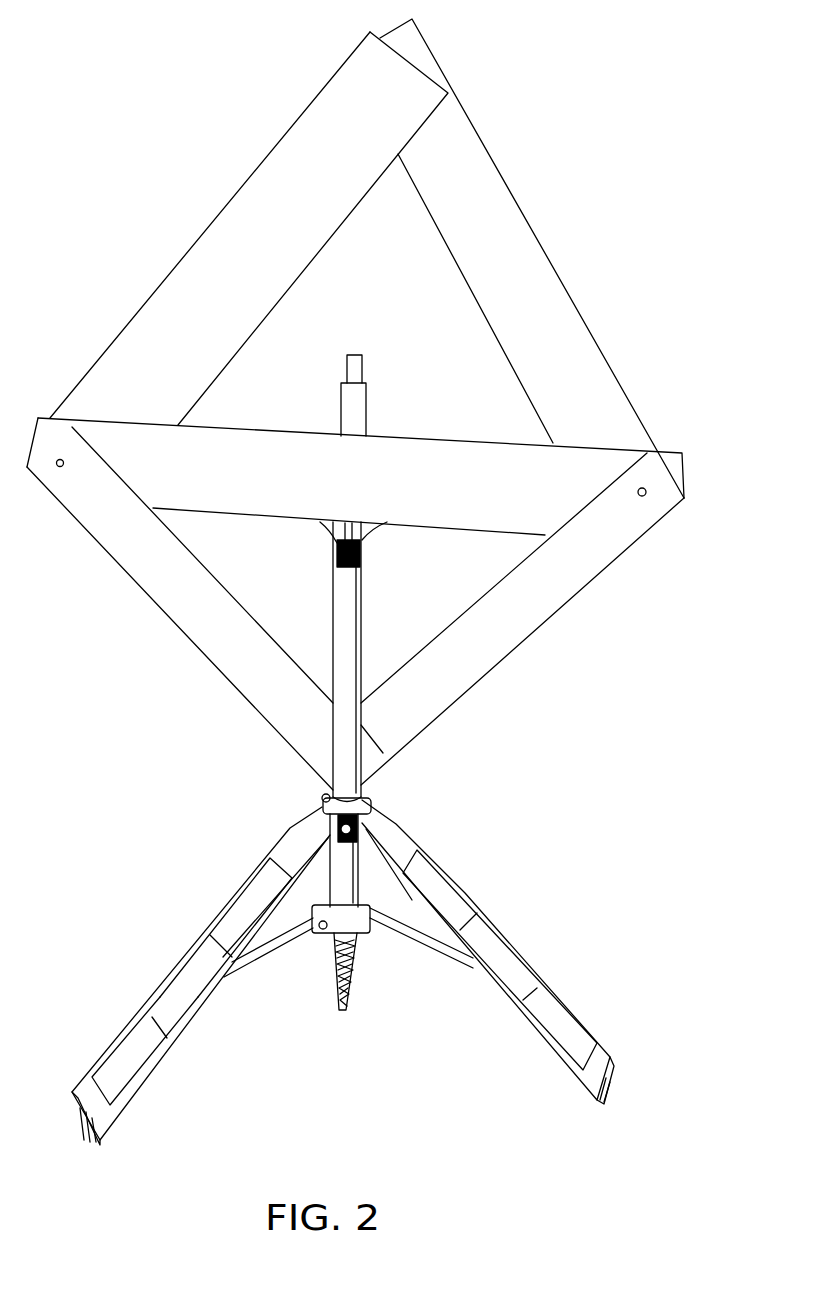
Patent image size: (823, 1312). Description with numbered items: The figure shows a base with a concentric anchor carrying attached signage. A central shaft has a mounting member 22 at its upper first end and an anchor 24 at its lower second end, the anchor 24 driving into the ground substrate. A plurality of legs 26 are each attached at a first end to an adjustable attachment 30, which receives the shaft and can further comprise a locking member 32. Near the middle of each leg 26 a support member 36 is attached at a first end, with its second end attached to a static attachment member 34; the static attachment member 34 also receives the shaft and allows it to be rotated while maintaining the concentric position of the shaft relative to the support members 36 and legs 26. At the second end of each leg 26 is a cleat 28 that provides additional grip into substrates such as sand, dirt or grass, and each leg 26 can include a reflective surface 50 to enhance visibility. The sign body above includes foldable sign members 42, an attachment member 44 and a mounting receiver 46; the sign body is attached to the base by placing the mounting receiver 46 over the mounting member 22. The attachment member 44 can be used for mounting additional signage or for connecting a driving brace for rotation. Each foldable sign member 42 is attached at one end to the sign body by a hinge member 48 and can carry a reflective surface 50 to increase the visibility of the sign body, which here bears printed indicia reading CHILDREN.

The mounting member 22 is at (362, 553).
The anchor 24 is at (357, 987).
The leg 26 is at (280, 852).
The cleat 28 is at (87, 1145).
The adjustable attachment 30 is at (363, 800).
The locking member 32 is at (323, 800).
The static attachment member 34 is at (372, 908).
The support member 36 is at (270, 962).
The foldable sign member 42 is at (557, 308).
The attachment member 44 is at (362, 367).
The mounting receiver 46 is at (326, 530).
The hinge member 48 is at (647, 498).
The reflective surface 50 is at (100, 1067).